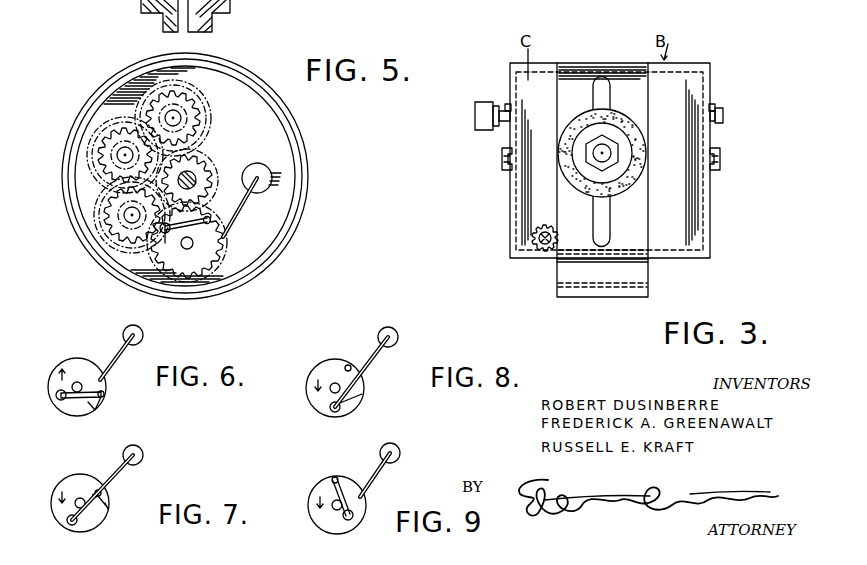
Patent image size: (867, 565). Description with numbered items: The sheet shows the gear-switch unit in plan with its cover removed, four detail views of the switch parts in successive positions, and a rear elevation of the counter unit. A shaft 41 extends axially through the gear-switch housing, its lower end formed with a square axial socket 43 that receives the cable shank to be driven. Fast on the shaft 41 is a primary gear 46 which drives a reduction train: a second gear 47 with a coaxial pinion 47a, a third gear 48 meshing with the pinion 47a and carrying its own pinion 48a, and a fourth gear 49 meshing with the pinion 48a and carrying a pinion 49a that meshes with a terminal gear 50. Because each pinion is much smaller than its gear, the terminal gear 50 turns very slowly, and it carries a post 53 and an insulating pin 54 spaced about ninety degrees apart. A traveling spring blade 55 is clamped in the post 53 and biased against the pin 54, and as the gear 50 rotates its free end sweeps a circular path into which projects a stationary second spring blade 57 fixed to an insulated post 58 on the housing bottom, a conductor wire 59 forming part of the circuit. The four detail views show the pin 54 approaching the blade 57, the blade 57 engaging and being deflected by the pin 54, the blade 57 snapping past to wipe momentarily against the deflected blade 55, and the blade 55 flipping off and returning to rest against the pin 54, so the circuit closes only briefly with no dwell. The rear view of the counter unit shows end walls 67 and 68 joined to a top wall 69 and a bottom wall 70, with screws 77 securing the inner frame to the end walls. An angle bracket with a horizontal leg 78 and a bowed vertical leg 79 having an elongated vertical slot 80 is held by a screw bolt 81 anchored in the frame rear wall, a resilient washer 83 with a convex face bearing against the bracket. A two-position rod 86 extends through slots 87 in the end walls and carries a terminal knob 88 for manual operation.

In FIG. 5, the shaft 41 is at (198, 180).
In FIG. 5, the axial socket 43 is at (192, 32).
In FIG. 5, the primary gear 46 is at (203, 170).
In FIG. 5, the second gear 47 is at (205, 135).
In FIG. 5, the pinion 47a is at (178, 128).
In FIG. 5, the third gear 48 is at (142, 121).
In FIG. 5, the pinion 48a is at (113, 162).
In FIG. 5, the fourth gear 49 is at (118, 188).
In FIG. 5, the pinion 49a is at (128, 230).
In FIG. 5, the terminal gear 50 is at (222, 251).
In FIG. 6, the terminal gear 50 is at (66, 358).
In FIG. 7, the terminal gear 50 is at (66, 480).
In FIG. 8, the terminal gear 50 is at (326, 362).
In FIG. 9, the terminal gear 50 is at (318, 482).
In FIG. 5, the post 53 is at (169, 242).
In FIG. 6, the post 53 is at (56, 397).
In FIG. 7, the post 53 is at (67, 522).
In FIG. 8, the post 53 is at (330, 412).
In FIG. 9, the post 53 is at (355, 516).
In FIG. 5, the pin 54 is at (209, 218).
In FIG. 6, the pin 54 is at (105, 394).
In FIG. 7, the pin 54 is at (96, 488).
In FIG. 8, the pin 54 is at (350, 364).
In FIG. 9, the pin 54 is at (333, 477).
In FIG. 5, the spring blade 55 is at (199, 233).
In FIG. 6, the spring blade 55 is at (92, 405).
In FIG. 7, the spring blade 55 is at (108, 511).
In FIG. 8, the spring blade 55 is at (362, 397).
In FIG. 9, the spring blade 55 is at (348, 486).
In FIG. 5, the second spring blade 57 is at (243, 206).
In FIG. 6, the second spring blade 57 is at (116, 360).
In FIG. 7, the second spring blade 57 is at (118, 478).
In FIG. 8, the second spring blade 57 is at (375, 365).
In FIG. 9, the second spring blade 57 is at (380, 476).
In FIG. 5, the insulated post 58 is at (257, 163).
In FIG. 6, the insulated post 58 is at (126, 328).
In FIG. 7, the insulated post 58 is at (142, 451).
In FIG. 8, the insulated post 58 is at (388, 327).
In FIG. 9, the insulated post 58 is at (398, 446).
In FIG. 3, the conductor wire 59 is at (540, 250).
In FIG. 3, the end wall 67 is at (510, 80).
In FIG. 3, the end wall 68 is at (710, 78).
In FIG. 3, the top wall 69 is at (693, 63).
In FIG. 3, the bottom wall 70 is at (683, 258).
In FIG. 3, the screws 77 is at (502, 162).
In FIG. 3, the horizontal leg 78 is at (600, 297).
In FIG. 3, the bowed vertical leg 79 is at (557, 192).
In FIG. 3, the vertical slot 80 is at (611, 88).
In FIG. 3, the screw bolt 81 is at (606, 152).
In FIG. 3, the resilient washer 83 is at (646, 166).
In FIG. 3, the rod 86 is at (723, 116).
In FIG. 3, the slots 87 is at (507, 104).
In FIG. 3, the terminal knob 88 is at (475, 118).